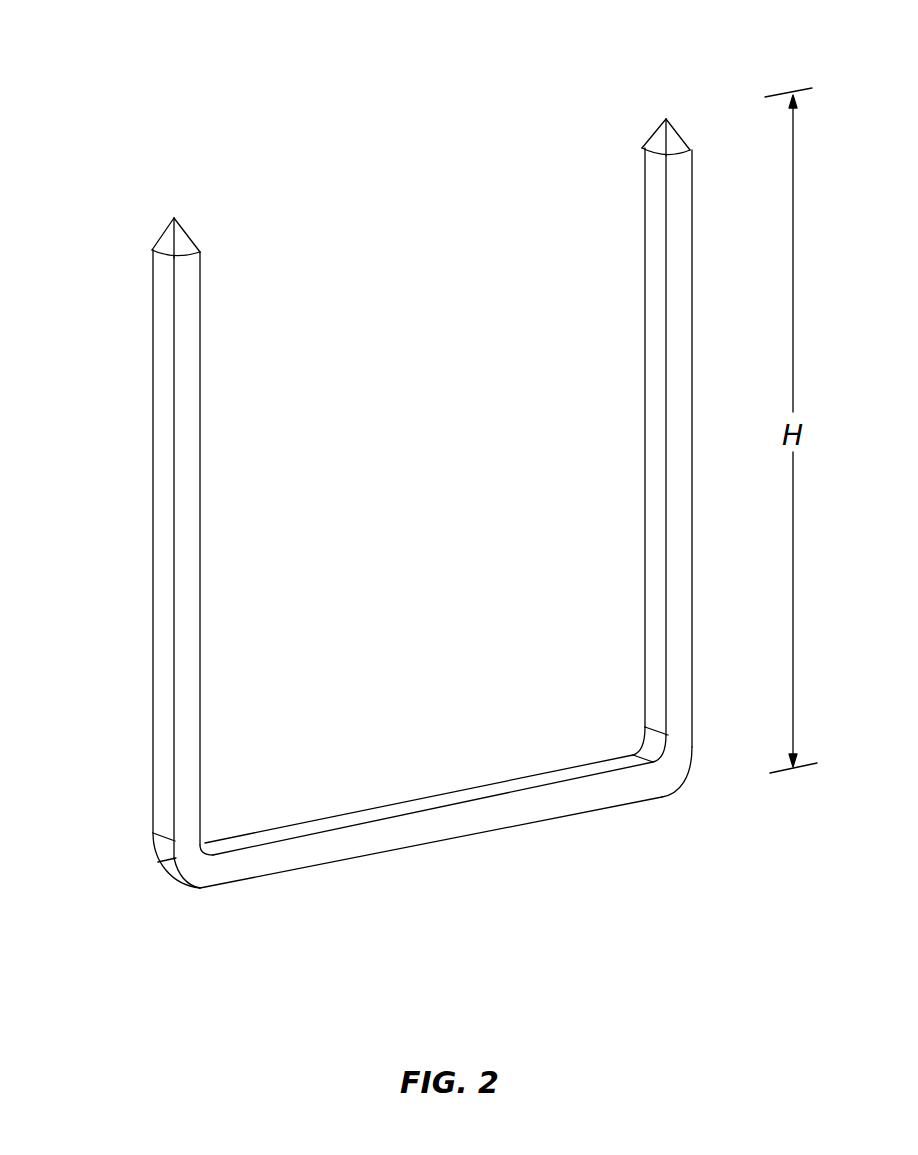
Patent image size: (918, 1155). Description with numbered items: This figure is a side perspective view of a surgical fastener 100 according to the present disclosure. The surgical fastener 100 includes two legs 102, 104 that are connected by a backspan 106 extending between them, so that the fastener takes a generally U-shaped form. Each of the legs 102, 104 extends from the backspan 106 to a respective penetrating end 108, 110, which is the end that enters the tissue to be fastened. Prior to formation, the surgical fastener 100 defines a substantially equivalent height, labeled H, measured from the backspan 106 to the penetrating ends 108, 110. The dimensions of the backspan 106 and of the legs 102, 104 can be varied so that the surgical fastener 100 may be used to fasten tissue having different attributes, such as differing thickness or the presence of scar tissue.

The surgical fastener 100 is at (160, 56).
The leg 102 is at (195, 503).
The leg 104 is at (685, 421).
The backspan 106 is at (398, 850).
The penetrating end 108 is at (183, 236).
The penetrating end 110 is at (672, 138).